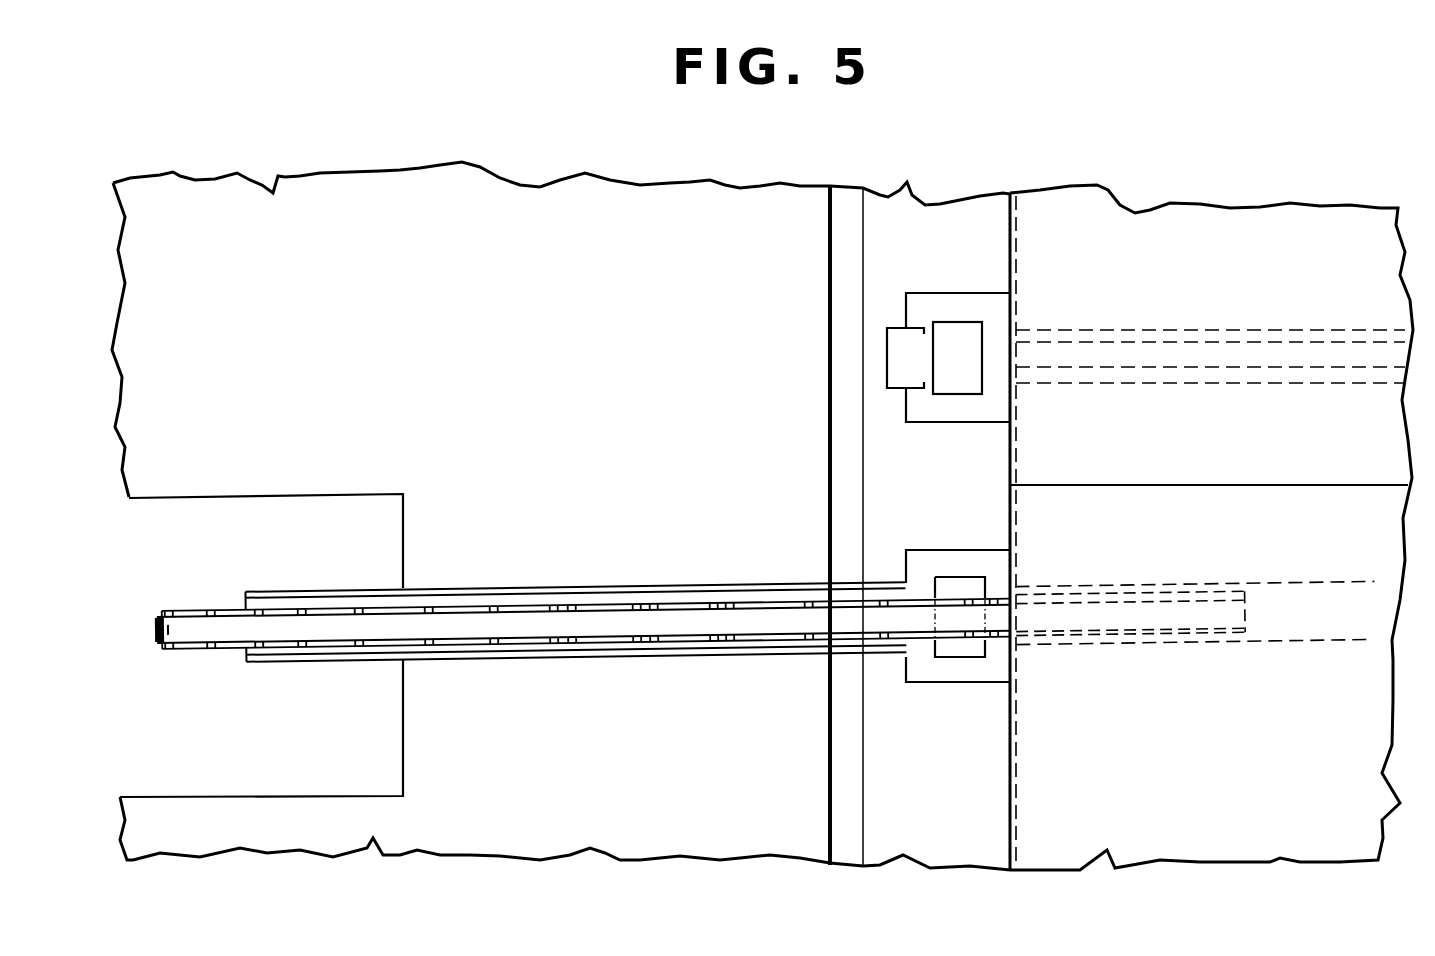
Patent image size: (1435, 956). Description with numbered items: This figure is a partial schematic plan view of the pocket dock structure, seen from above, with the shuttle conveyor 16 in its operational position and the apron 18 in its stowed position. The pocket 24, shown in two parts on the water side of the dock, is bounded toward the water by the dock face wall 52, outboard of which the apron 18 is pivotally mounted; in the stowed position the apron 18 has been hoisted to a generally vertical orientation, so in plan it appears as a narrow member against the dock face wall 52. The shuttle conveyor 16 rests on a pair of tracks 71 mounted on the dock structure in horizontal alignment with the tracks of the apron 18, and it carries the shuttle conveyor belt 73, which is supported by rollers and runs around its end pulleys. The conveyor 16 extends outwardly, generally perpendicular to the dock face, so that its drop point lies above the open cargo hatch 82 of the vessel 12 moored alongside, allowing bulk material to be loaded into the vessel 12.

The vessel 12 is at (583, 365).
The shuttle conveyor 16 is at (224, 600).
The apron 18 is at (889, 352).
The pocket 24 is at (1220, 273).
The dock face wall 52 is at (1013, 524).
The tracks 71 is at (520, 612).
The shuttle conveyor belt 73 is at (612, 641).
The cargo hatch 82 is at (363, 496).